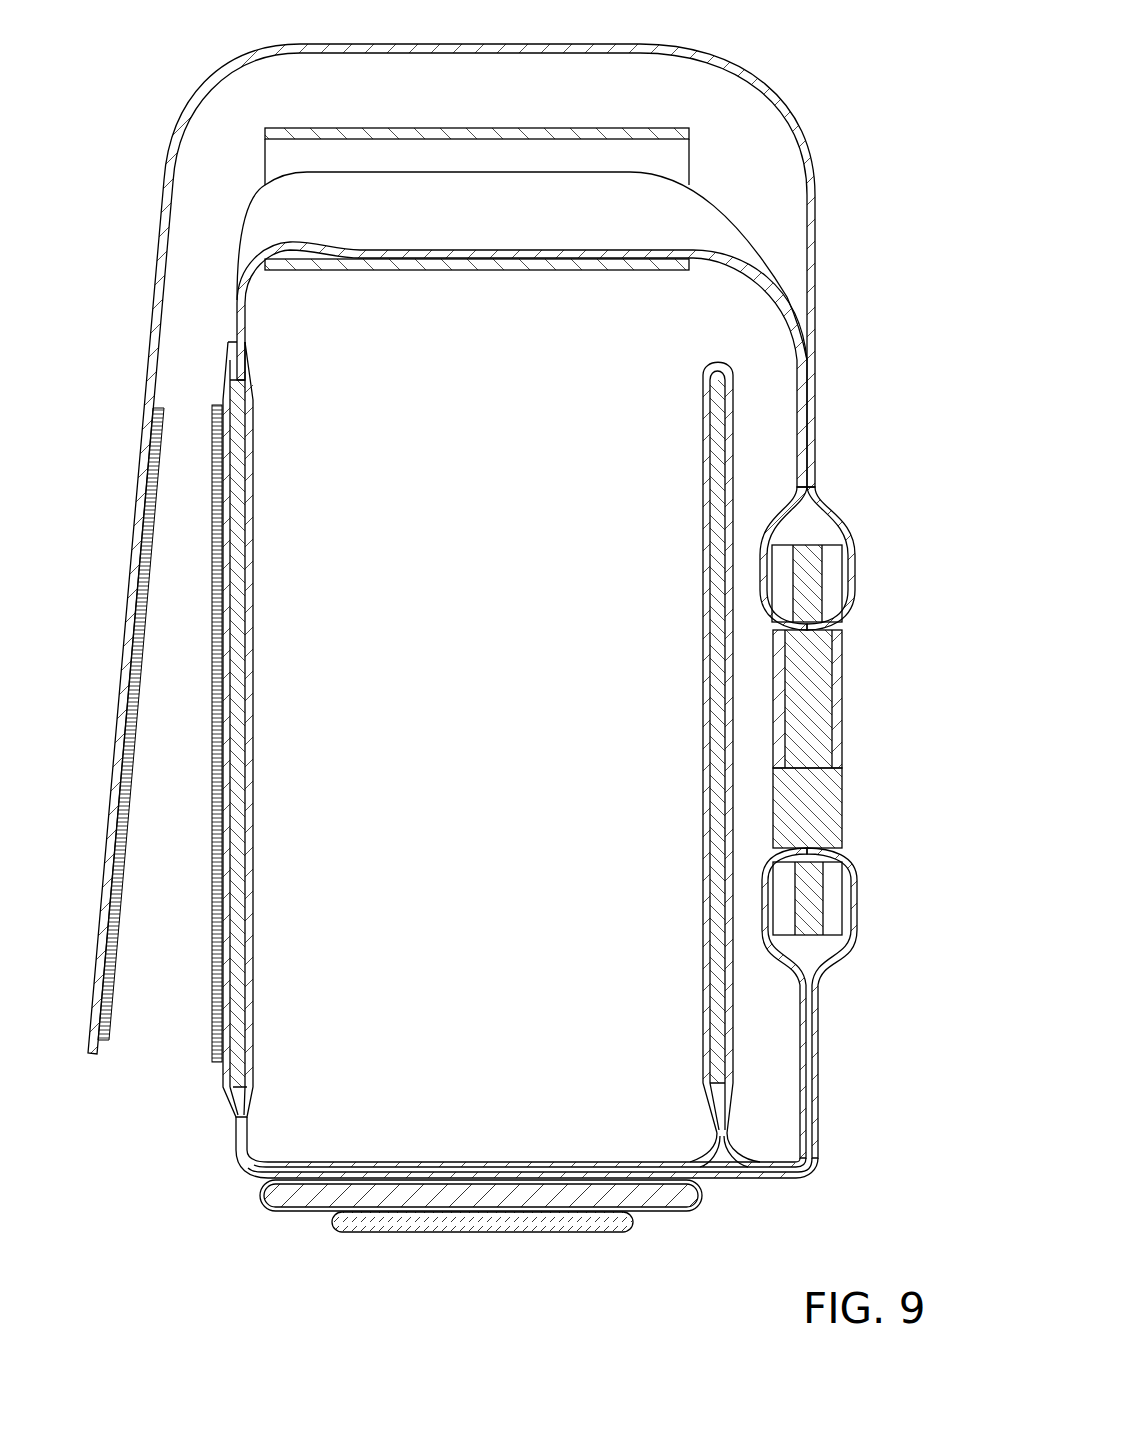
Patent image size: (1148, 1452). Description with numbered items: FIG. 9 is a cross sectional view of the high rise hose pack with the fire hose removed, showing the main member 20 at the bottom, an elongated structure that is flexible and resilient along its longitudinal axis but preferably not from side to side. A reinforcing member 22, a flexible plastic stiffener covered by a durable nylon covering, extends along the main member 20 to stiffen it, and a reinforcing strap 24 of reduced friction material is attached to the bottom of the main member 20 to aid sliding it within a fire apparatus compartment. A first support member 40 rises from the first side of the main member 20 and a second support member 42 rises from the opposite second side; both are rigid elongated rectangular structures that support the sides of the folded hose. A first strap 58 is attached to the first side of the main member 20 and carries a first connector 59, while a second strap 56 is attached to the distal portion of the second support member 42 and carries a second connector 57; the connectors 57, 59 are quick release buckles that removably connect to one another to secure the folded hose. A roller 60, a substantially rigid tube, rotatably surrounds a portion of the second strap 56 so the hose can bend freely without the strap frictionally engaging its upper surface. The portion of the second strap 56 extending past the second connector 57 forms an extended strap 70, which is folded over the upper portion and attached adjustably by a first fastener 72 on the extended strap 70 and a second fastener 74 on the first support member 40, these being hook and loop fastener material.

The main member 20 is at (700, 1209).
The reinforcing member 22 is at (287, 1202).
The reinforcing strap 24 is at (488, 1232).
The first support member 40 is at (245, 473).
The second support member 42 is at (710, 537).
The second strap 56 is at (735, 229).
The second connector 57 is at (845, 623).
The first strap 58 is at (818, 1052).
The first connector 59 is at (842, 803).
The roller 60 is at (669, 126).
The extended strap 70 is at (220, 82).
The first fastener 72 is at (128, 1022).
The second fastener 74 is at (215, 1042).